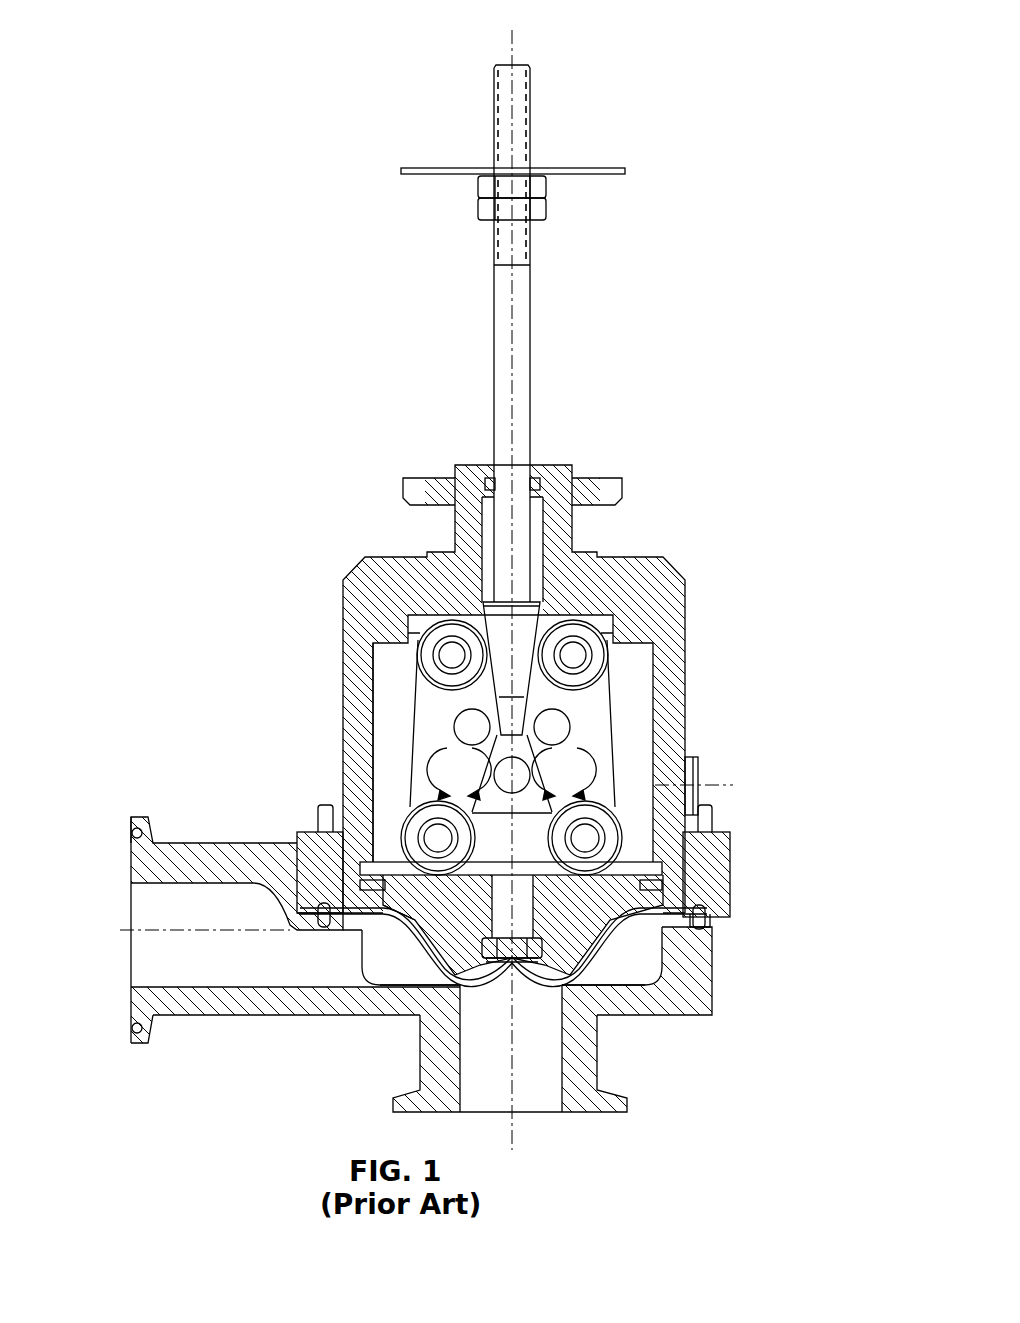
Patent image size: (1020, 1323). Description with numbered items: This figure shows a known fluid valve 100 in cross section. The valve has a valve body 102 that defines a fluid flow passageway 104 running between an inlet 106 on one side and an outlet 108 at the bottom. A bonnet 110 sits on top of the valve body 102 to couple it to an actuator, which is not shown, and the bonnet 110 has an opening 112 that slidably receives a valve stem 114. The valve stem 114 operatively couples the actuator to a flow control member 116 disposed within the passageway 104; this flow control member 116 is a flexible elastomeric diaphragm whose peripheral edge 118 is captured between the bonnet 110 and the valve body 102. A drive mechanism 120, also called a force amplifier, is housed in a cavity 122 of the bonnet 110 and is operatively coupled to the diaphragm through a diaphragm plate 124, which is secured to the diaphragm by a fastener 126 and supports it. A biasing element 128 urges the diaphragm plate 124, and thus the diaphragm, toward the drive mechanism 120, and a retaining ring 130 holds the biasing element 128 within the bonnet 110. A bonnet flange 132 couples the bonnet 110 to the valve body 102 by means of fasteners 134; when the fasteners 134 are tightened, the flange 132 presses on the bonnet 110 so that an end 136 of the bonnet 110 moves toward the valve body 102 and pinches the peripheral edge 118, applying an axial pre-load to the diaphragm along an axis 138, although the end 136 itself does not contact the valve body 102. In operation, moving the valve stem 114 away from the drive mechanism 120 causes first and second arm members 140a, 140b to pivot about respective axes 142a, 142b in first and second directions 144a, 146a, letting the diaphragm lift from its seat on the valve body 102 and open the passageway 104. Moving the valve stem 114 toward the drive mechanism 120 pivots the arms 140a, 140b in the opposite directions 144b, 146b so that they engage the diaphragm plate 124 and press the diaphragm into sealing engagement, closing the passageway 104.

The fluid valve 100 is at (222, 178).
The valve body 102 is at (290, 1015).
The fluid flow passageway 104 is at (248, 974).
The inlet 106 is at (131, 886).
The outlet 108 is at (540, 1112).
The bonnet 110 is at (687, 590).
The opening 112 is at (535, 552).
The valve stem 114 is at (531, 365).
The flow control member 116 is at (705, 978).
The peripheral edge 118 is at (690, 928).
The drive mechanism 120 is at (655, 666).
The cavity 122 is at (392, 662).
The diaphragm plate 124 is at (432, 903).
The fastener 126 is at (560, 988).
The biasing element 128 is at (690, 885).
The retaining ring 130 is at (705, 918).
The bonnet flange 132 is at (730, 852).
The fasteners 134 is at (328, 823).
The end of the bonnet 136 is at (305, 897).
The axis 138 is at (514, 48).
The first arm member 140a is at (428, 703).
The second arm member 140b is at (592, 738).
The first pivot axis 142a is at (470, 725).
The second pivot axis 142b is at (610, 682).
The first direction 144a is at (472, 727).
The first opposite direction 144b is at (430, 770).
The second direction 146a is at (553, 727).
The second opposite direction 146b is at (600, 785).